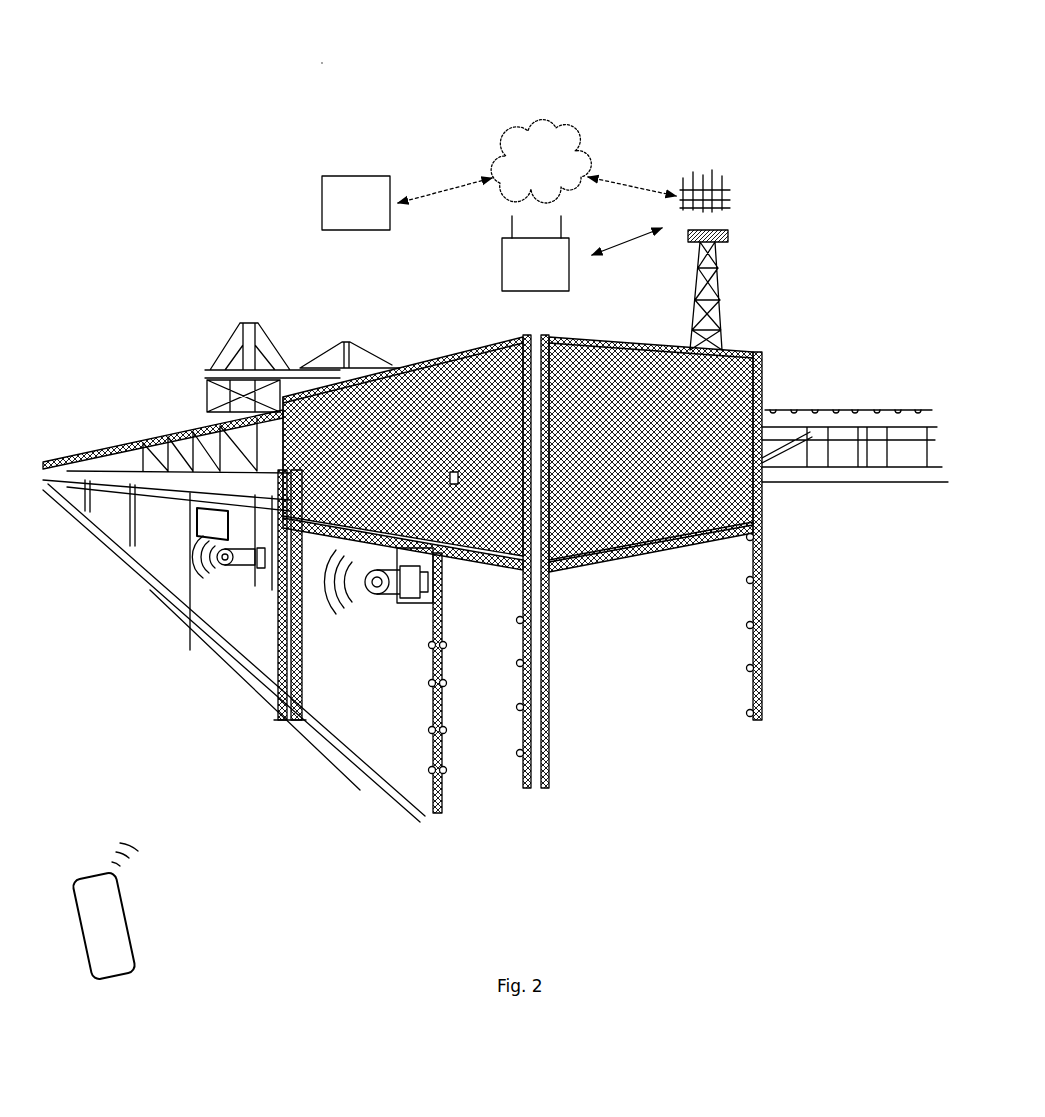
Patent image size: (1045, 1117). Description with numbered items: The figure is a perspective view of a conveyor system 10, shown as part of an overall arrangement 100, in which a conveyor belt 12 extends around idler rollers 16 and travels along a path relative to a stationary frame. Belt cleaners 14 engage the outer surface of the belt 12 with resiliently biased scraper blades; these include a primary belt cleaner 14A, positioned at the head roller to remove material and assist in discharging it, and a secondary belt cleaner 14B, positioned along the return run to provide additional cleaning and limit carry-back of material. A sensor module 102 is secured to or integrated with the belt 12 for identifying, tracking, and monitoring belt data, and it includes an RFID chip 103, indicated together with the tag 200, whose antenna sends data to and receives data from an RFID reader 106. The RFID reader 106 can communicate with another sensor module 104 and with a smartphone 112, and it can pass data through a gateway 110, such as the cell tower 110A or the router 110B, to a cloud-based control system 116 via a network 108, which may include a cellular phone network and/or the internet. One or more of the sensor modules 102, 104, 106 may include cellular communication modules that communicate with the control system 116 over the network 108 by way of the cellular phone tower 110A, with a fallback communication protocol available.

The monitoring system 100 is at (320, 60).
The conveyor system 10 is at (146, 674).
The conveyor belt 12 is at (176, 442).
The idler rollers 16 is at (180, 430).
The belt cleaners 14 is at (471, 574).
The primary belt cleaner 14A is at (470, 540).
The secondary belt cleaner 14B is at (308, 582).
The sensor module 102 is at (518, 430).
The RFID chip 103 is at (518, 430).
The sensor tag 200 is at (453, 470).
The sensor module 104 is at (233, 570).
The RFID reader 106 is at (192, 536).
The network 108 is at (560, 136).
The gateway 110 is at (702, 118).
The cell tower 110A is at (728, 202).
The router 110B is at (535, 253).
The smartphone 112 is at (77, 878).
The control system 116 is at (370, 214).